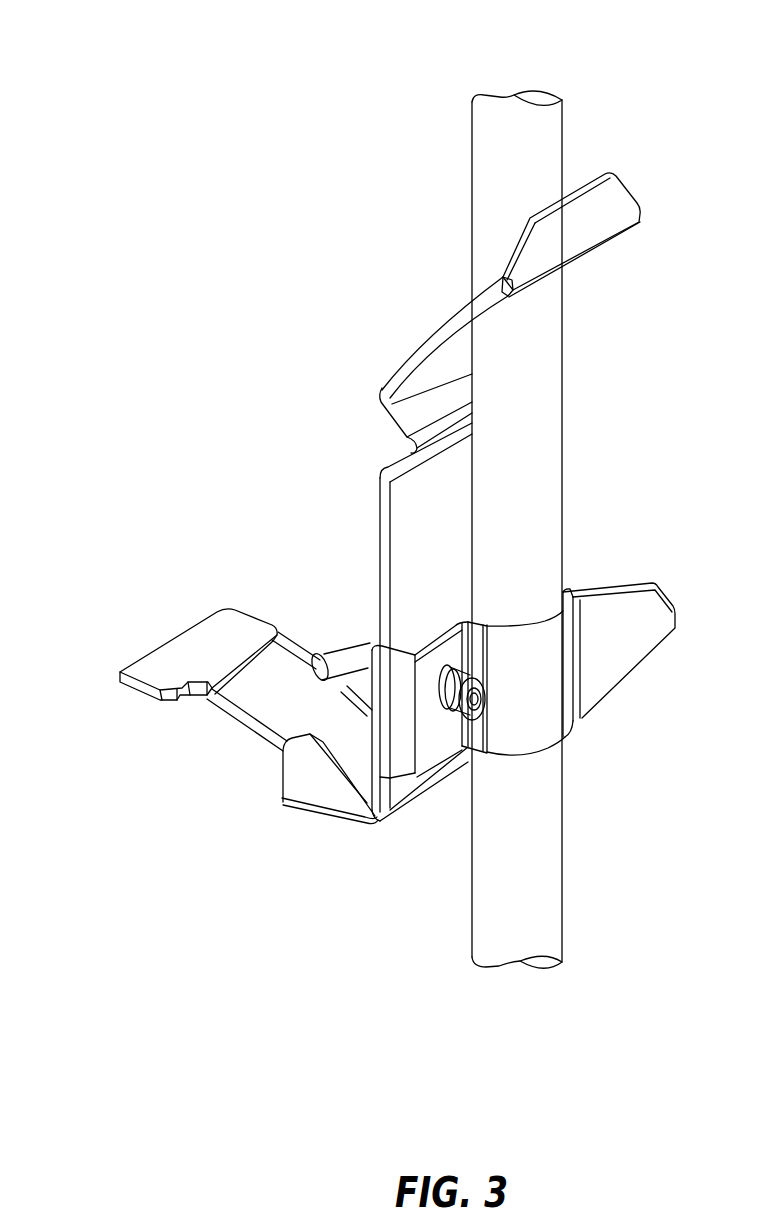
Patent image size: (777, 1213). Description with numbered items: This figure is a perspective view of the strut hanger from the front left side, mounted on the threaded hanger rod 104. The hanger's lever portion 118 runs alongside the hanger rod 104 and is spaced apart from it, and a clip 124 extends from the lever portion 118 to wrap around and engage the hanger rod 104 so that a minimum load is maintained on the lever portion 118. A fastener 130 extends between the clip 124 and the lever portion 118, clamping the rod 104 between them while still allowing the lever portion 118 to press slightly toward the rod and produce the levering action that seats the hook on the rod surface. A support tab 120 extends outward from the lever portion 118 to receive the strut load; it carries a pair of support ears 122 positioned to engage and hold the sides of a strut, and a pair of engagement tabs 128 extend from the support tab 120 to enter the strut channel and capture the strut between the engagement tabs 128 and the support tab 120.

The threaded hanger rod 104 is at (562, 125).
The lever portion 118 is at (373, 558).
The support tab 120 is at (244, 703).
The support ears 122 is at (313, 775).
The clip 124 is at (595, 752).
The engagement tabs 128 is at (252, 608).
The fastener 130 is at (447, 724).